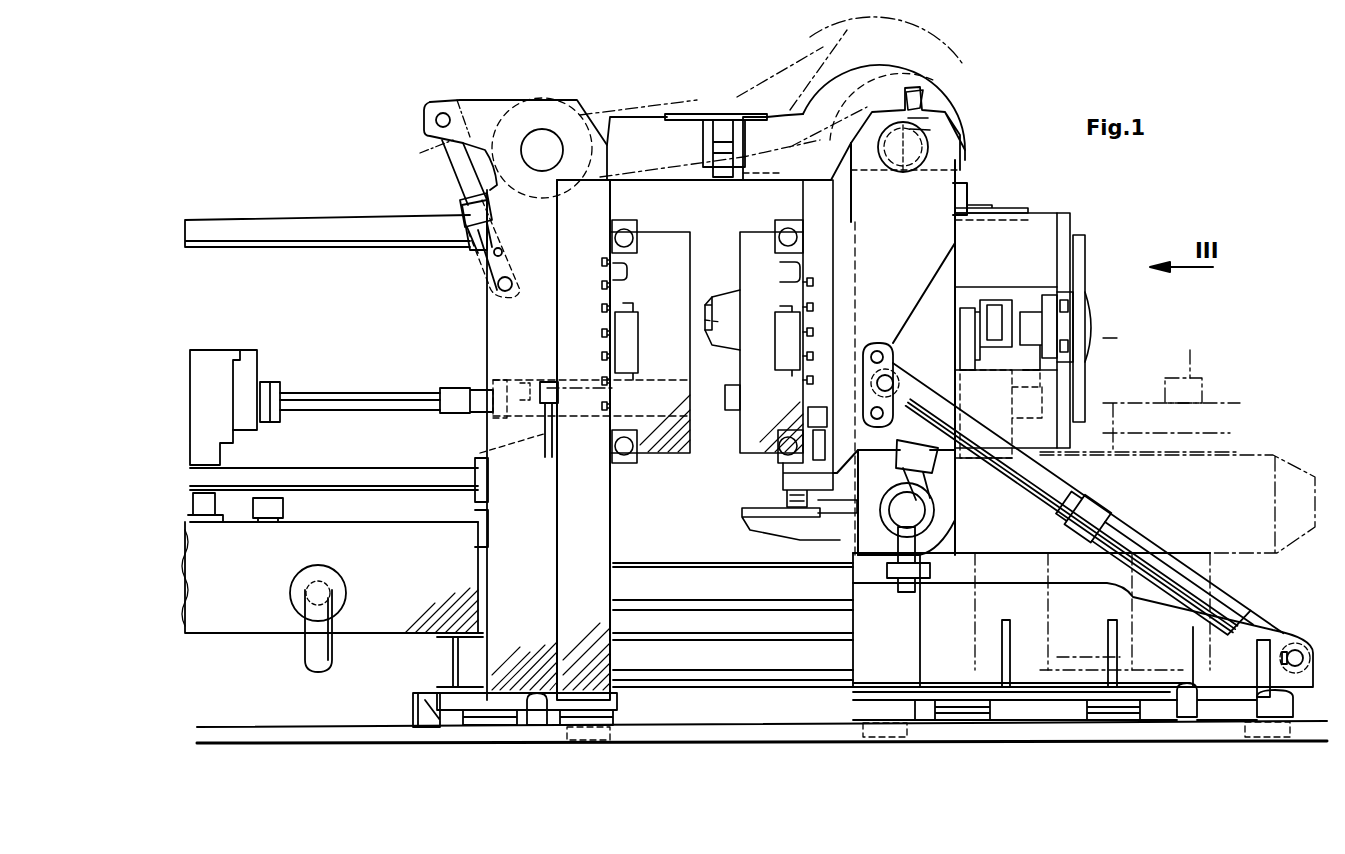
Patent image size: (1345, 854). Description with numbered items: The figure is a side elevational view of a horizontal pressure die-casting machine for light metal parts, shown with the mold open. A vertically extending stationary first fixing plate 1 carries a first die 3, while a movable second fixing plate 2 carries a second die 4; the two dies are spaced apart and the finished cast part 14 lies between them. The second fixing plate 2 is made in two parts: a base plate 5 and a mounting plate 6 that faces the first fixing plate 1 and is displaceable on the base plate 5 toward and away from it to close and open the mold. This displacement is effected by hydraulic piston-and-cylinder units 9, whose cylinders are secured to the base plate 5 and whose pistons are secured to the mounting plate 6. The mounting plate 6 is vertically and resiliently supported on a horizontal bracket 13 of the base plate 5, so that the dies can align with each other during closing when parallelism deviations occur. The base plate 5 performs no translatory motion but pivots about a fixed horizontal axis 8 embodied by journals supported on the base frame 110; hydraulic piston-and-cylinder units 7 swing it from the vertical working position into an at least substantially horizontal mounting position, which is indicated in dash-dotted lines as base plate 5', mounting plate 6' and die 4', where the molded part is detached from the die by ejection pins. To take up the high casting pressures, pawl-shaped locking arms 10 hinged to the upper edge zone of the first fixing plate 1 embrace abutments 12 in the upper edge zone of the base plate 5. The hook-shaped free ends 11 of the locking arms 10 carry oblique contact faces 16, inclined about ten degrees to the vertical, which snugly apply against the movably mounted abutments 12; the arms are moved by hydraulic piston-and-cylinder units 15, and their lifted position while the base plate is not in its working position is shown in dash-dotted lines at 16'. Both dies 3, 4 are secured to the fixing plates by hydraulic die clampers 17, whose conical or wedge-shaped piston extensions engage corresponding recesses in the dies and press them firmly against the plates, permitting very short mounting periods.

The first fixing plate 1 is at (497, 143).
The second fixing plate 2 is at (1000, 198).
The first die 3 is at (657, 240).
The second die 4 is at (779, 326).
The second die in horizontal mounting position 4' is at (1203, 348).
The base plate 5 is at (987, 198).
The base plate in horizontal mounting position 5' is at (1177, 445).
The mounting plate 6 is at (914, 349).
The mounting plate in horizontal mounting position 6' is at (1202, 386).
The hydraulic piston-and-cylinder units 7 is at (1043, 482).
The fixed horizontal axis 8 is at (903, 510).
The hydraulic piston-and-cylinder units 9 is at (1047, 383).
The locking arms 10 is at (783, 120).
The free ends of locking arms 11 is at (943, 93).
The abutments 12 is at (927, 140).
The horizontal bracket 13 is at (757, 513).
The finished part 14 is at (717, 280).
The hydraulic piston-and-cylinder units 15 is at (460, 173).
The oblique contact faces 16 is at (871, 105).
The lifted locking arm position 16' is at (904, 57).
The die clampers 17 is at (612, 240).
The base frame 110 is at (441, 666).